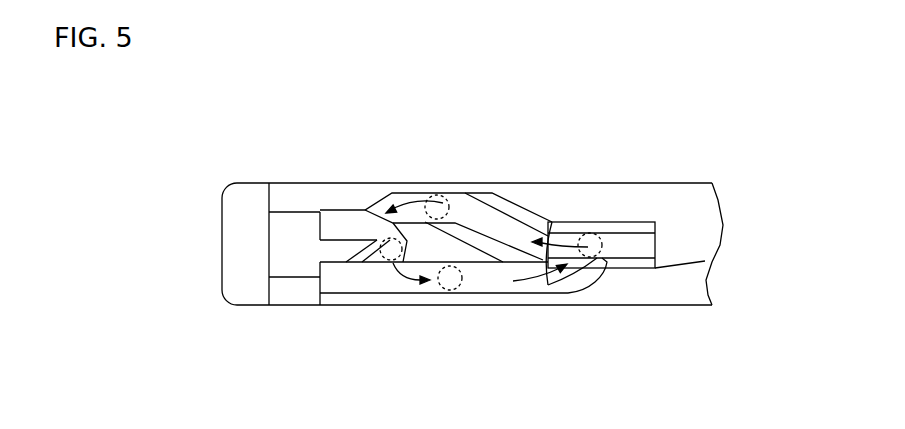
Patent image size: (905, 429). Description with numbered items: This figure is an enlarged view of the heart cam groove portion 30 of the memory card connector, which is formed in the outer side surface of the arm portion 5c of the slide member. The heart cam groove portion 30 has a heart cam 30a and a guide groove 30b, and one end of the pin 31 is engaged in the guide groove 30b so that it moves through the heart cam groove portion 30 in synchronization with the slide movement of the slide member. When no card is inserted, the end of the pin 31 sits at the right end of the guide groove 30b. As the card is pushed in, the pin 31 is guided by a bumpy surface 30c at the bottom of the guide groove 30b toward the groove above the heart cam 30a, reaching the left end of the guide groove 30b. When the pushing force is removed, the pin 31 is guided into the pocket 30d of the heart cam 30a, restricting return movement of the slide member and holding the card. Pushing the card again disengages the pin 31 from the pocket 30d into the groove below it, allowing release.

The arm portion 5c is at (347, 183).
The heart cam groove portion 30 is at (516, 213).
The heart cam 30a is at (468, 253).
The guide groove 30b is at (468, 283).
The bumpy surface 30c is at (548, 244).
The pocket 30d is at (398, 250).
The pin 31 is at (604, 238).